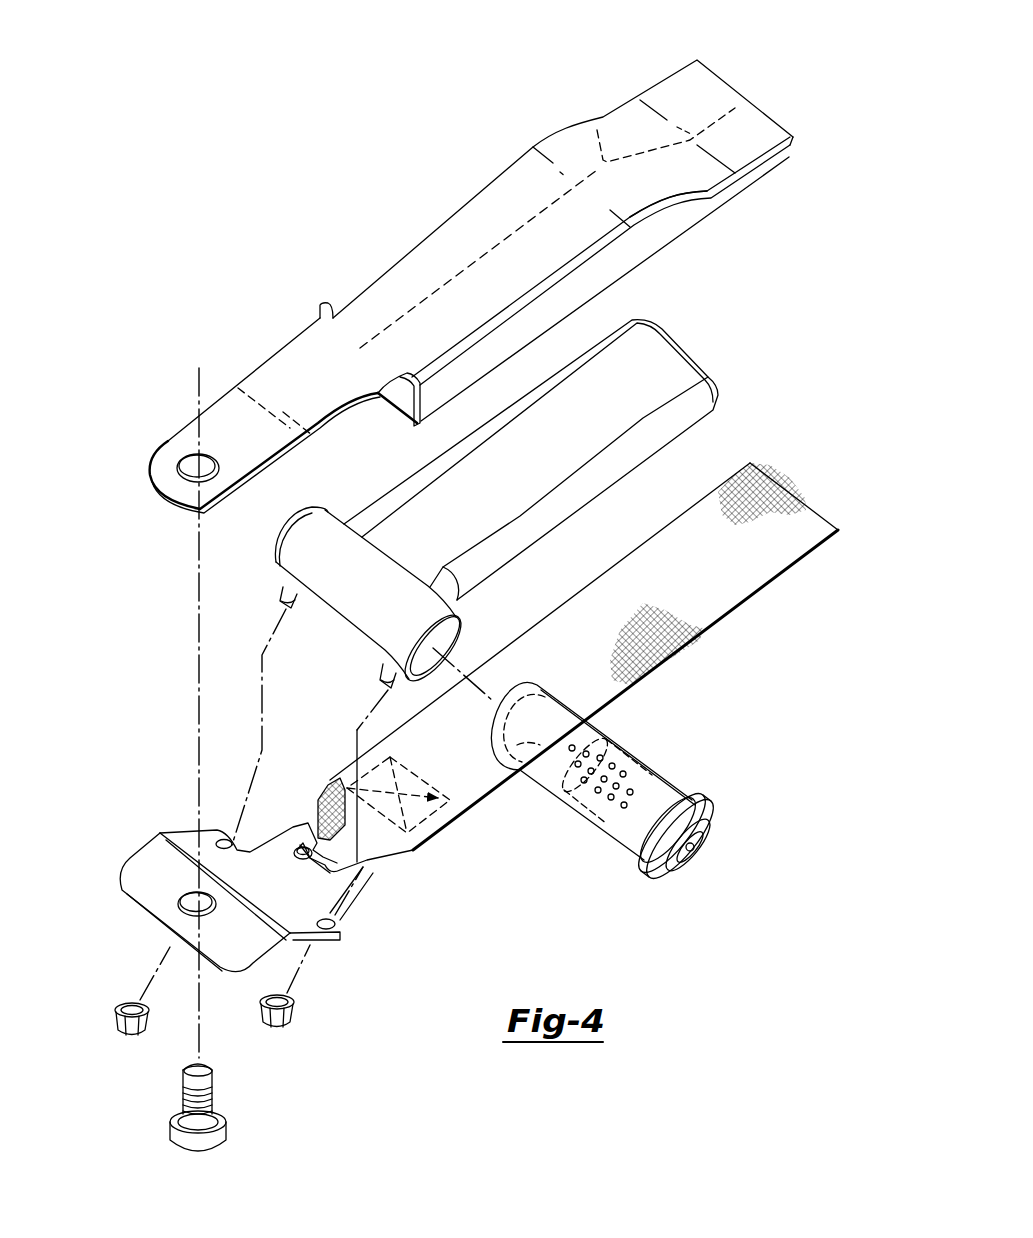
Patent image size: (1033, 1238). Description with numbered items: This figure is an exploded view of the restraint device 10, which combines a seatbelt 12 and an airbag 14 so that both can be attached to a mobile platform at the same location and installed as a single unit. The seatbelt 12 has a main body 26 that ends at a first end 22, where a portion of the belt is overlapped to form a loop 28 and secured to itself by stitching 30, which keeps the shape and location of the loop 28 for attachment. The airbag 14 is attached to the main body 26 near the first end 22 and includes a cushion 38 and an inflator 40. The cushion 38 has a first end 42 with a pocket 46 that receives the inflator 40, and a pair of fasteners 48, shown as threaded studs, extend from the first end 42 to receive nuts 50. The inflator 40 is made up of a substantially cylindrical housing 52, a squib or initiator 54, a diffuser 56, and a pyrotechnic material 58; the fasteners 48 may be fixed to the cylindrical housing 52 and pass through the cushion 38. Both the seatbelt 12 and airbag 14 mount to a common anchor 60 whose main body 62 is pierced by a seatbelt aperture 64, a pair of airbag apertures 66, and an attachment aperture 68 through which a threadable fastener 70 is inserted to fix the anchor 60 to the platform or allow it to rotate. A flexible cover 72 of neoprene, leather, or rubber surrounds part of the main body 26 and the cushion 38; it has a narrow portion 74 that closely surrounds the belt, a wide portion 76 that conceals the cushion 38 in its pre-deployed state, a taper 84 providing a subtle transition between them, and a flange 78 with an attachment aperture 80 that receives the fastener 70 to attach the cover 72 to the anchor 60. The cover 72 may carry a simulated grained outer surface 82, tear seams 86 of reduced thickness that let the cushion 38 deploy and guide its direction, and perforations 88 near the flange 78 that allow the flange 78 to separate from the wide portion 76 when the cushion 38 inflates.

The restraint device 10 is at (793, 318).
The seatbelt 12 is at (808, 494).
The airbag 14 is at (692, 350).
The first end 22 is at (306, 860).
The main body 26 is at (727, 583).
The loop 28 is at (383, 867).
The stitching 30 is at (438, 826).
The cushion 38 is at (583, 420).
The inflator 40 is at (667, 805).
The first end 42 is at (323, 533).
The pocket 46 is at (447, 643).
The fasteners 48 is at (385, 668).
The nuts 50 is at (118, 1025).
The cylindrical housing 52 is at (613, 752).
The initiator 54 is at (688, 848).
The diffuser 56 is at (612, 818).
The pyrotechnic material 58 is at (530, 748).
The anchor 60 is at (125, 850).
The main body 62 is at (218, 953).
The seatbelt aperture 64 is at (317, 843).
The airbag apertures 66 is at (224, 840).
The attachment aperture 68 is at (187, 907).
The fastener 70 is at (221, 1141).
The cover 72 is at (438, 220).
The narrow portion 74 is at (693, 90).
The wide portion 76 is at (372, 287).
The flange 78 is at (227, 408).
The attachment aperture 80 is at (193, 452).
The simulated grained outer surface 82 is at (460, 225).
The taper 84 is at (670, 177).
The tear seams 86 is at (605, 160).
The perforations 88 is at (277, 413).